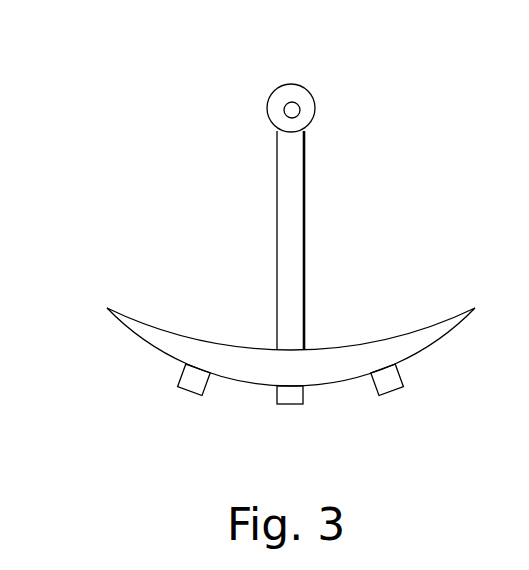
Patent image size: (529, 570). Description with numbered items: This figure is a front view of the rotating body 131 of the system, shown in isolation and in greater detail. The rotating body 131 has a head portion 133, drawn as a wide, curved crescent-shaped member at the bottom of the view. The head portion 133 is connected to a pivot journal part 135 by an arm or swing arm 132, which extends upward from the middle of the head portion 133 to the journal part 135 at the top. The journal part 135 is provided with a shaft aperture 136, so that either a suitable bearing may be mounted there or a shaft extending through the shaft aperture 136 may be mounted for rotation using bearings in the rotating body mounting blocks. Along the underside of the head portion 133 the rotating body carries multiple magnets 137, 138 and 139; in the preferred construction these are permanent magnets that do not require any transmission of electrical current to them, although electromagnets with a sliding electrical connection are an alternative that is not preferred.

The rotating body 131 is at (443, 108).
The swing arm 132 is at (276, 240).
The head portion 133 is at (108, 320).
The pivot journal part 135 is at (297, 85).
The shaft aperture 136 is at (277, 108).
The magnet 137 is at (195, 393).
The magnet 138 is at (288, 404).
The magnet 139 is at (387, 391).